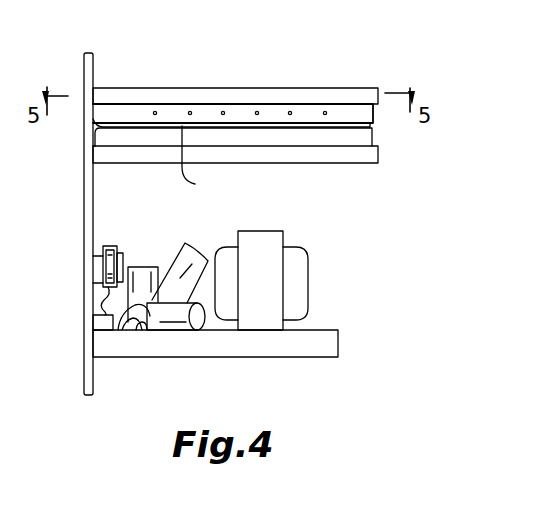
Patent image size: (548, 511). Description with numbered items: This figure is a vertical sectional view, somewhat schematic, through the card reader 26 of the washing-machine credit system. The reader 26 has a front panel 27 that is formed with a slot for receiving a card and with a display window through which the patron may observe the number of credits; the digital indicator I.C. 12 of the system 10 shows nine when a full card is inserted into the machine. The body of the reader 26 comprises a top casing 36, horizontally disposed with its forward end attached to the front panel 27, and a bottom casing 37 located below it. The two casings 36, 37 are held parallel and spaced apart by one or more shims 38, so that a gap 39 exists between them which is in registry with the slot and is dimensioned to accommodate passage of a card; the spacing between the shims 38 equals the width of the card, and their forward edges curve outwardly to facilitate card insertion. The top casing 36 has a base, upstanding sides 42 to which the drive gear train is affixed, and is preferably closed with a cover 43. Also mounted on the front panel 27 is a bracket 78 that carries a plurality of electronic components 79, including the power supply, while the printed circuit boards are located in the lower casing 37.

The cabinet assembly 10 is at (74, 287).
The digital indicator I.C. 12 is at (103, 267).
The reader 26 is at (235, 105).
The front panel 27 is at (93, 58).
The top casing 36 is at (163, 100).
The bottom casing 37 is at (125, 155).
The shim 38 is at (203, 161).
The gap 39 is at (201, 125).
The upstanding sides 42 is at (355, 115).
The cover 43 is at (285, 100).
The bracket 78 is at (177, 345).
The electronic components 79 is at (272, 267).